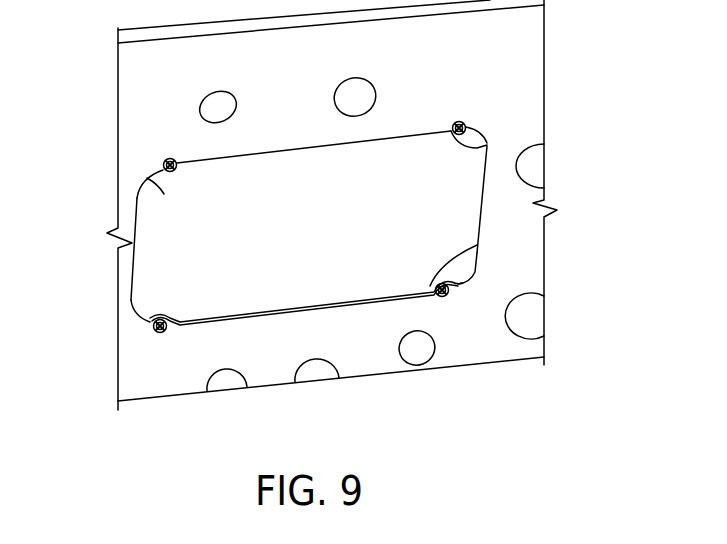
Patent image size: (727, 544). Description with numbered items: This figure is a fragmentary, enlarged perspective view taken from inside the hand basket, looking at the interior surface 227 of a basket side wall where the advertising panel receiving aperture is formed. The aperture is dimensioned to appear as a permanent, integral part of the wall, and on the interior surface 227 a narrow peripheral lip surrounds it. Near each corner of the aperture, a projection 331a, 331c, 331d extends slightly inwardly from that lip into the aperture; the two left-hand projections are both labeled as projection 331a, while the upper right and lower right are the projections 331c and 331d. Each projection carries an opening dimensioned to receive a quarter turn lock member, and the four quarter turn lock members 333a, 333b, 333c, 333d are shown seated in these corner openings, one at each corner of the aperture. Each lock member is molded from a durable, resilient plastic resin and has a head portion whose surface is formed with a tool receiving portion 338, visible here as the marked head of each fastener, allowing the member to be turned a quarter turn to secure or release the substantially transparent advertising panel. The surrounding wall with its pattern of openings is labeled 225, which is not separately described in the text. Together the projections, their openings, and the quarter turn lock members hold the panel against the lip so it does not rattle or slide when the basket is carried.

The mounting wall panel 225 is at (521, 331).
The interior surface 227 is at (465, 97).
The projection 331a is at (137, 191).
The projection 331c is at (487, 144).
The projection 331d is at (432, 284).
The quarter turn lock member 333a is at (164, 162).
The quarter turn lock member 333b is at (156, 330).
The quarter turn lock member 333c is at (454, 124).
The quarter turn lock member 333d is at (450, 292).
The tool receiving portion 338 is at (171, 159).